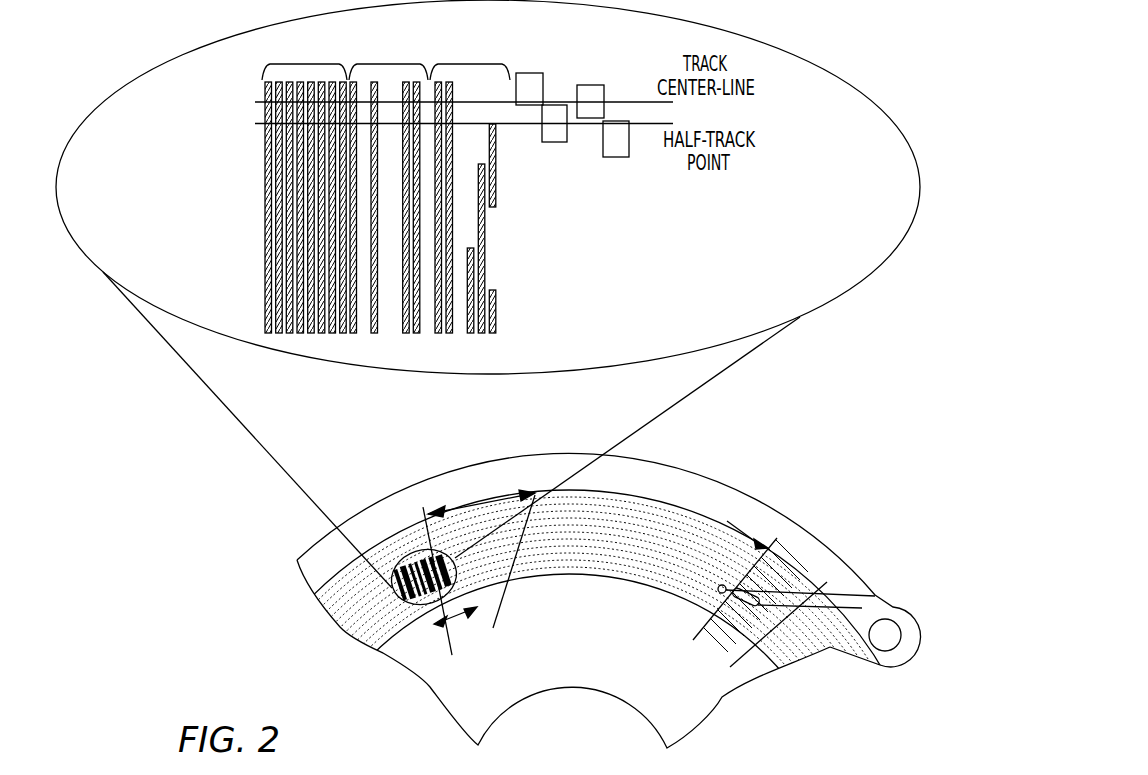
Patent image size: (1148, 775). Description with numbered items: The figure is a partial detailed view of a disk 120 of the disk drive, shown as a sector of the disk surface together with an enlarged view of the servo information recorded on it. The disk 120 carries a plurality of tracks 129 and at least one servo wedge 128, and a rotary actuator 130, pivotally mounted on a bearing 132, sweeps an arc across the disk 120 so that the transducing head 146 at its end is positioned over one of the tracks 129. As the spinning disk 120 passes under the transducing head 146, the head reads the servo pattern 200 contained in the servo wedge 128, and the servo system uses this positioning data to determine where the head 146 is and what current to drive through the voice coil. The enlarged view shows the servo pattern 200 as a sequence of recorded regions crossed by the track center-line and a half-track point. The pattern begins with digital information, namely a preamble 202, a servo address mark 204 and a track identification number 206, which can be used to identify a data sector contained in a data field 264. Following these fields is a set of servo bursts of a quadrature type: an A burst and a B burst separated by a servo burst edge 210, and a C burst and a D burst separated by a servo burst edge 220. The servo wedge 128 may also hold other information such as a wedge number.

The disk 120 is at (318, 568).
The servo wedge 128 is at (464, 612).
The data tracks 129 is at (656, 513).
The rotary actuator 130 is at (832, 648).
The bearing 132 is at (893, 619).
The transducing head 146 is at (722, 585).
The servo pattern 200 is at (740, 33).
The preamble 202 is at (262, 79).
The servo address mark 204 is at (402, 63).
The track identification number 206 is at (492, 63).
The servo burst edge 210 is at (543, 105).
The servo burst edge 220 is at (604, 120).
The data field 264 is at (502, 493).